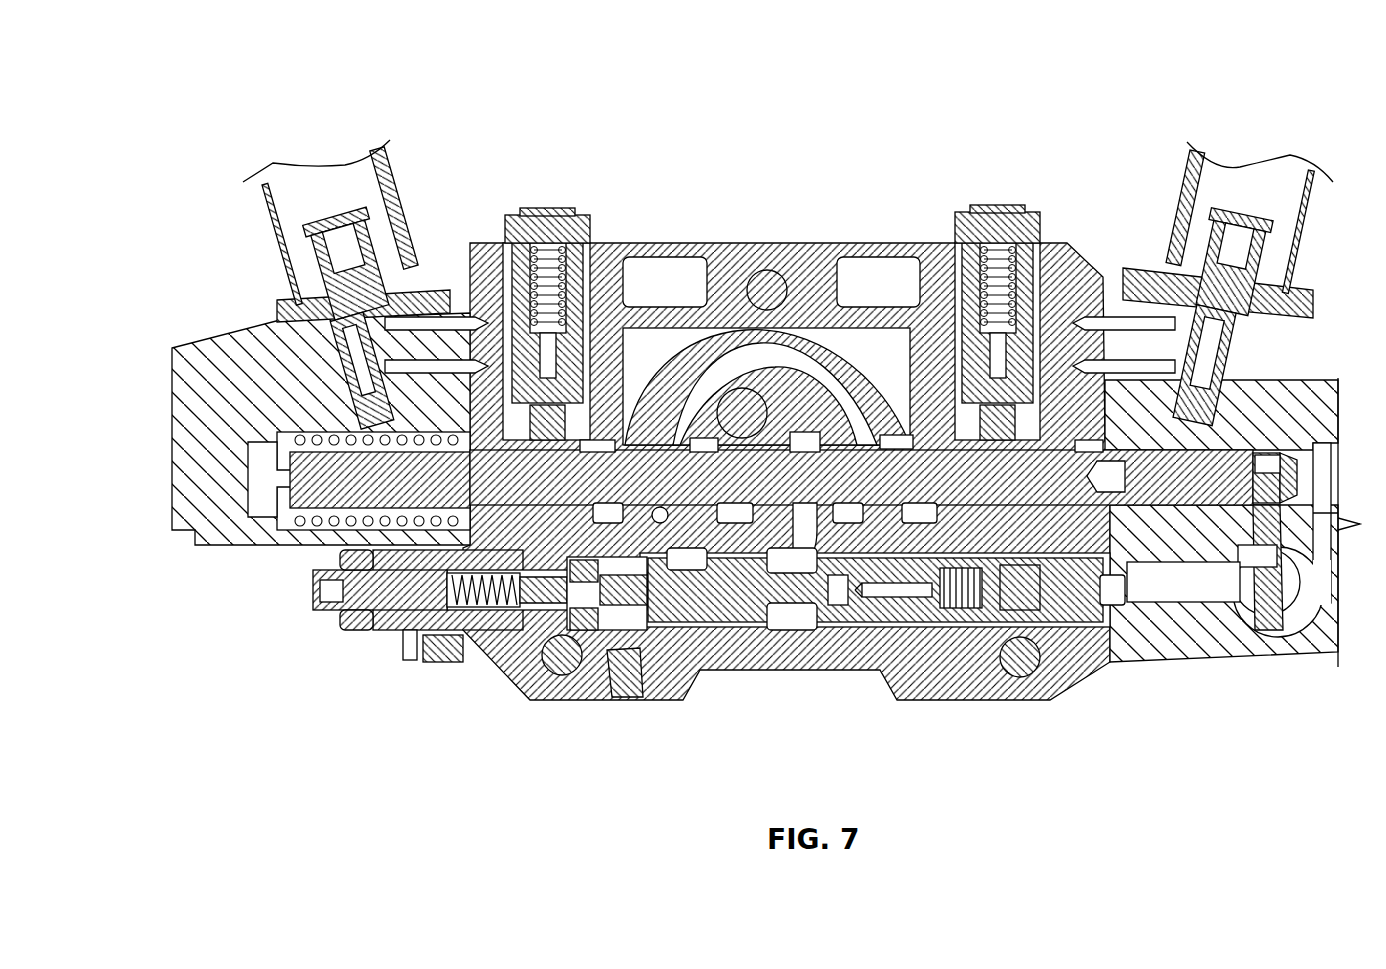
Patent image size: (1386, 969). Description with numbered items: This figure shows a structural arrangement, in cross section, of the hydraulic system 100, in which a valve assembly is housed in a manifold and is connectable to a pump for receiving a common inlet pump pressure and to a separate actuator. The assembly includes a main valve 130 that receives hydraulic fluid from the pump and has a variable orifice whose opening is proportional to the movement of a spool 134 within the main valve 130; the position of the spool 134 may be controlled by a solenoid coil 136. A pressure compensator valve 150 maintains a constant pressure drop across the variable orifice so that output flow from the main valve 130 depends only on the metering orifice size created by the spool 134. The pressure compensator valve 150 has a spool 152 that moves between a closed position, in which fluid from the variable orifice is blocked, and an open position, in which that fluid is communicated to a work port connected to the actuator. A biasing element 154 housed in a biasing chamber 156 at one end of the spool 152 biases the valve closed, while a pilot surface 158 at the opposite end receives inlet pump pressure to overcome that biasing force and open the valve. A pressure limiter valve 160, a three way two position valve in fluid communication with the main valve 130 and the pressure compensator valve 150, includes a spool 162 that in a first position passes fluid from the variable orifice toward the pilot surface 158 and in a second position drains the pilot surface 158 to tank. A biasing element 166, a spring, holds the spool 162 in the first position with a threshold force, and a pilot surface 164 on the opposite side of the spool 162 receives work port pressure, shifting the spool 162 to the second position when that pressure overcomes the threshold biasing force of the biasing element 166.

The hydraulic system 100 is at (734, 428).
The main valve 130 is at (800, 447).
The spool 134 is at (675, 445).
The solenoid coil 136 is at (237, 327).
The pressure compensator valve 150 is at (797, 627).
The spool 152 is at (833, 603).
The biasing element 154 is at (987, 620).
The biasing chamber 156 is at (973, 617).
The pilot surface 158 is at (720, 583).
The pressure limiter valve 160 is at (390, 630).
The spool 162 is at (545, 615).
The pilot surface 164 is at (688, 615).
The biasing element 166 is at (485, 580).